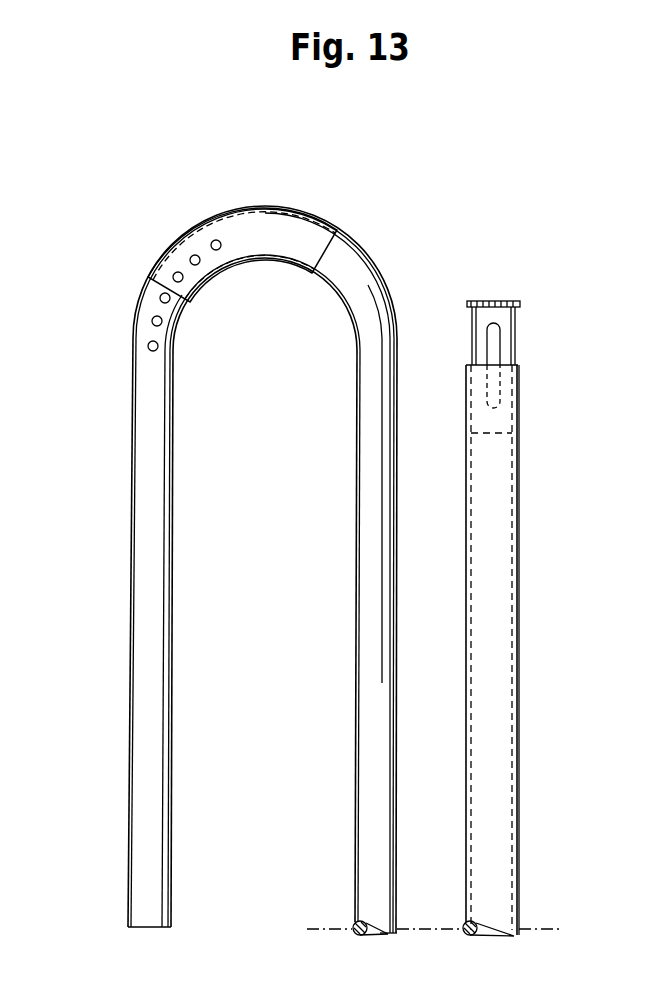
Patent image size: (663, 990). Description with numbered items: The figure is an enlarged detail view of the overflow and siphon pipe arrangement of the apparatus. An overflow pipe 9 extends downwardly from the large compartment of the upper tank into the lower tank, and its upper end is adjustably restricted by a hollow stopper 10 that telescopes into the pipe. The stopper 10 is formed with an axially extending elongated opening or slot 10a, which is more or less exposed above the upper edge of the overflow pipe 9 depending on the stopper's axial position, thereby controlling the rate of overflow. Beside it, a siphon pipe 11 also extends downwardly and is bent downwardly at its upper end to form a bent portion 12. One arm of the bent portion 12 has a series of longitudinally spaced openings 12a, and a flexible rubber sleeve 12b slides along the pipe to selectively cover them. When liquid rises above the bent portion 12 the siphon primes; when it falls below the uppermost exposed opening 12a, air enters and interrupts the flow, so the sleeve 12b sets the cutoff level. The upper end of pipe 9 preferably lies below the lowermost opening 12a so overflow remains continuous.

The overflow pipe 9 is at (511, 535).
The hollow stopper 10 is at (512, 315).
The elongated opening or slot 10a is at (495, 350).
The siphon pipe 11 is at (357, 547).
The upper bent portion 12 is at (352, 247).
The longitudinally spaced openings 12a is at (151, 322).
The flexible sleeve 12b is at (304, 207).